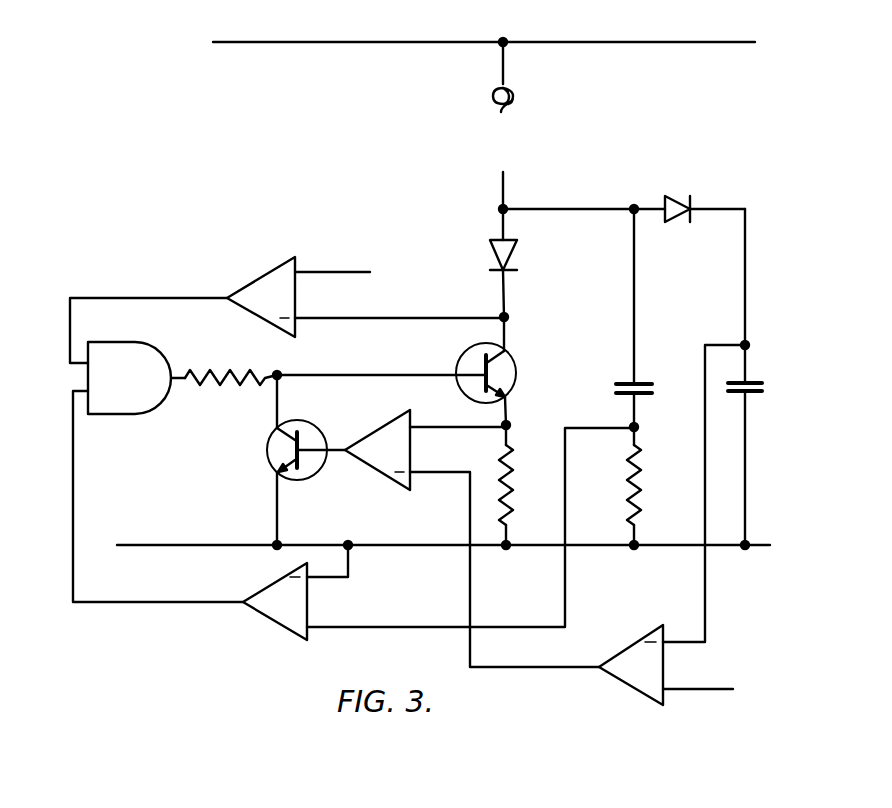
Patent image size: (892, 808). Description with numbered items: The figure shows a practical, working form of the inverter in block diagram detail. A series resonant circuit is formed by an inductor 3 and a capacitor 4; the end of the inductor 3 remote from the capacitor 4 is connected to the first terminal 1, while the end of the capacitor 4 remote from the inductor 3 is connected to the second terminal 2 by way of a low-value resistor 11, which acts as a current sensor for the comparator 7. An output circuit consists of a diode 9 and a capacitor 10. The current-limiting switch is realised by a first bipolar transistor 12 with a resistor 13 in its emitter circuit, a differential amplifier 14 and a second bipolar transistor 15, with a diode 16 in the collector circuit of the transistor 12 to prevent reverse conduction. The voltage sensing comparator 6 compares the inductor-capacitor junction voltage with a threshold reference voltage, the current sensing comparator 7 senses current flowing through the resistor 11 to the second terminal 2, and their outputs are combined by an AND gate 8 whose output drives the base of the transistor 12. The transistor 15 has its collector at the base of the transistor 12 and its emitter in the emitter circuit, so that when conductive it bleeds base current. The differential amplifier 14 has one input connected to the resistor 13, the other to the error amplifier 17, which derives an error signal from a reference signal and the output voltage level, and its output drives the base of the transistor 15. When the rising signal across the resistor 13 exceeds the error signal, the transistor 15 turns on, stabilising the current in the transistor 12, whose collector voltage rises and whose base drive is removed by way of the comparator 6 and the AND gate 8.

The first terminal 1 is at (628, 42).
The second terminal 2 is at (765, 548).
The inductor 3 is at (511, 136).
The capacitor 4 is at (643, 386).
The voltage sensing comparator 6 is at (270, 275).
The current sensing comparator 7 is at (262, 594).
The AND gate 8 is at (150, 362).
The diode 9 is at (678, 202).
The capacitor 10 is at (741, 394).
The low-value resistor 11 is at (642, 476).
The first bipolar transistor 12 is at (461, 354).
The resistor 13 is at (513, 480).
The differential amplifier 14 is at (381, 428).
The second bipolar transistor 15 is at (315, 431).
The diode 16 is at (518, 254).
The error amplifier 17 is at (628, 680).